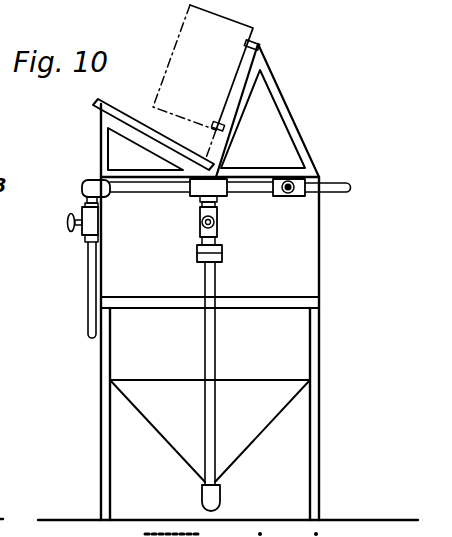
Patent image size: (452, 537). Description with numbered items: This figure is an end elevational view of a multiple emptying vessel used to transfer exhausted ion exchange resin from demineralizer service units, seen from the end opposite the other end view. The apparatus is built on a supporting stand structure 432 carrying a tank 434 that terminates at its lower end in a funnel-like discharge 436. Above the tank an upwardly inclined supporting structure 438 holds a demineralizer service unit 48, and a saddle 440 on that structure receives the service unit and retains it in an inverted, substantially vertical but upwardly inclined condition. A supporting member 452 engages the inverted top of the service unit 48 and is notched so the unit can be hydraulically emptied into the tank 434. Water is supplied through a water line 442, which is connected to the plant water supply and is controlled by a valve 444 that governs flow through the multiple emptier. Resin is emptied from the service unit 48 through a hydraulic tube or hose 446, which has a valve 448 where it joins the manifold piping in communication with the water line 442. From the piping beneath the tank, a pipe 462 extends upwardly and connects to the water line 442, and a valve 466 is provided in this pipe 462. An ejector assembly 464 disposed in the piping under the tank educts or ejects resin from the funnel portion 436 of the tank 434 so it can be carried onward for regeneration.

The demineralizer service unit 48 is at (192, 19).
The supporting stand structure 432 is at (319, 353).
The tank 434 is at (298, 273).
The funnel-like discharge 436 is at (270, 410).
The upwardly inclined supporting structure 438 is at (262, 71).
The saddle 440 is at (253, 44).
The water line 442 is at (342, 182).
The valve 444 is at (293, 197).
The hydraulic tube or hose 446 is at (89, 298).
The valve 448 is at (68, 221).
The supporting member 452 is at (120, 118).
The pipe 462 is at (212, 360).
The ejector assembly 464 is at (35, 0).
The valve 466 is at (218, 220).